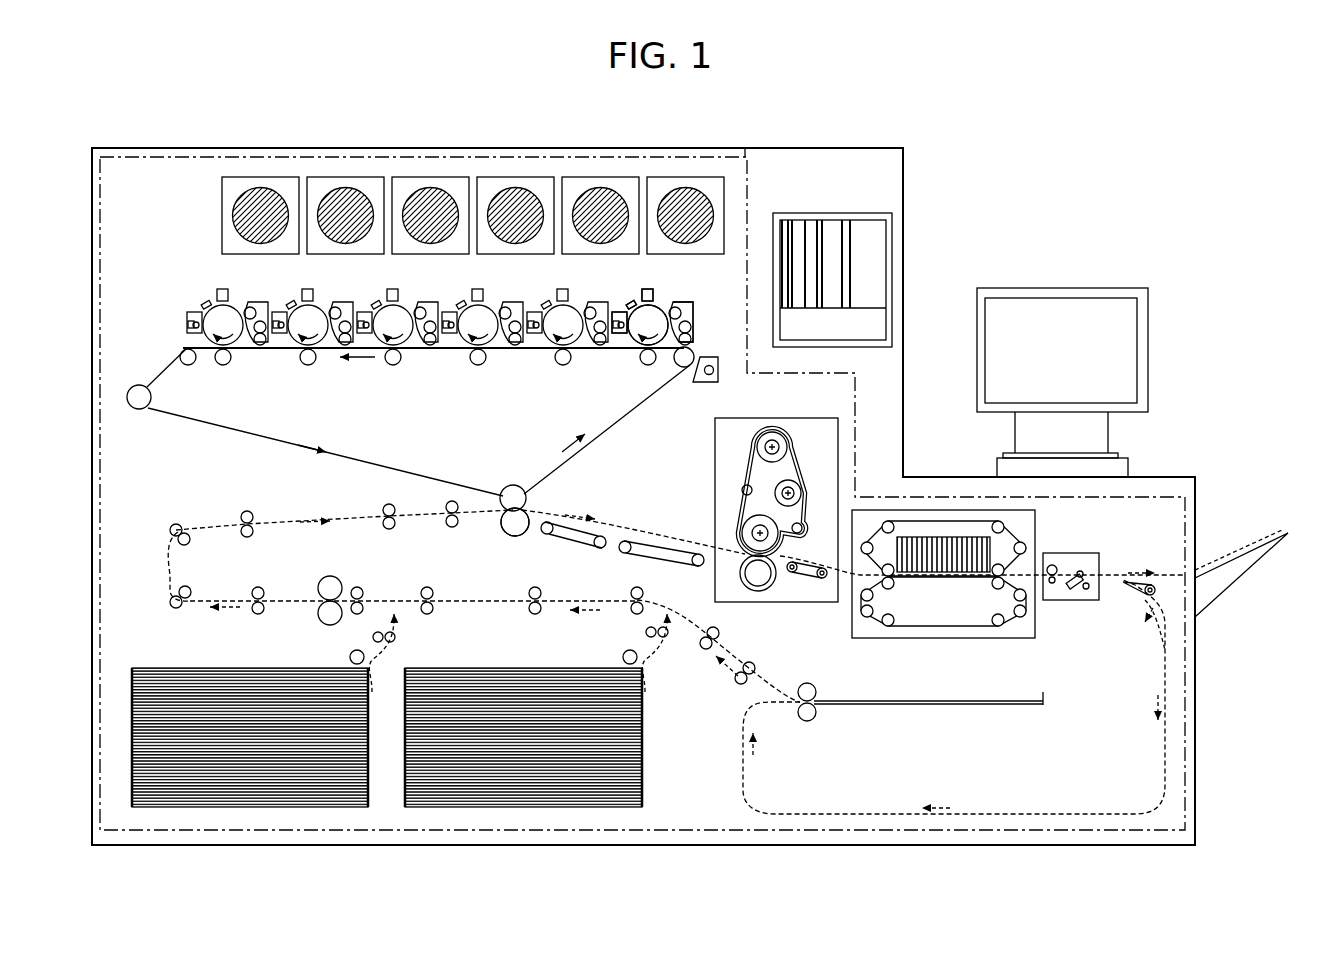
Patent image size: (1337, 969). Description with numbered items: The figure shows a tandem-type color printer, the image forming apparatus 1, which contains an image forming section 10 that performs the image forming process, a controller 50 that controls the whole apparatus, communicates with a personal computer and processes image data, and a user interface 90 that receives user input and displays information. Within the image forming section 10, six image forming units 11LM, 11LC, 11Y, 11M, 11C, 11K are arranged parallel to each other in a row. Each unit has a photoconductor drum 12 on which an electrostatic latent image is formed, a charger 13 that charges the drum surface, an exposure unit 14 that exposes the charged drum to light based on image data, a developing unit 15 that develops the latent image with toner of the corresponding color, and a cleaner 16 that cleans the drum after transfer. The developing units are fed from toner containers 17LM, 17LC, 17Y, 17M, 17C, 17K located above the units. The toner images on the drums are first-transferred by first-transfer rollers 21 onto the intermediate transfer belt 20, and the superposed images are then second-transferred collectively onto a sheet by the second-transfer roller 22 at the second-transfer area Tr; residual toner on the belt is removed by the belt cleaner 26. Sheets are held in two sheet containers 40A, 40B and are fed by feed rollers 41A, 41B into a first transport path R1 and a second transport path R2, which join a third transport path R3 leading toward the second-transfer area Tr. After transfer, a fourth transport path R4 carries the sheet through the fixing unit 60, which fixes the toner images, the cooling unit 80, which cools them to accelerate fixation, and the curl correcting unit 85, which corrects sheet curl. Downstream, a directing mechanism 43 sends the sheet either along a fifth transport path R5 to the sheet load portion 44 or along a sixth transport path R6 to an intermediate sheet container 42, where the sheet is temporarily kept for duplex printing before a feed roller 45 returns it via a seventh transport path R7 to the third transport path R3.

The image forming apparatus 1 is at (863, 128).
The image forming section 10 is at (748, 142).
The toner container 17K is at (262, 177).
The toner container 17C is at (347, 177).
The toner container 17M is at (432, 177).
The toner container 17Y is at (517, 177).
The toner container 17LC is at (602, 177).
The toner container 17LM is at (688, 177).
The image forming unit 11K is at (238, 303).
The image forming unit 11C is at (323, 303).
The image forming unit 11M is at (408, 303).
The image forming unit 11Y is at (493, 303).
The image forming unit 11LC is at (578, 303).
The image forming unit 11LM is at (672, 330).
The photoconductor drum 12 is at (638, 346).
The charger 13 is at (630, 302).
The exposure unit 14 is at (651, 300).
The developing unit 15 is at (690, 303).
The cleaner 16 is at (616, 335).
The intermediate transfer belt 20 is at (268, 441).
The first-transfer roller 21 is at (223, 366).
The second-transfer roller 22 is at (515, 538).
The belt cleaner 26 is at (705, 383).
The second-transfer area Tr is at (528, 505).
The sheet container 40A is at (185, 668).
The feed roller 41A is at (348, 656).
The sheet container 40B is at (490, 668).
The feed roller 41B is at (622, 656).
The intermediate sheet container 42 is at (983, 705).
The directing mechanism 43 is at (1130, 587).
The sheet load portion 44 is at (1237, 595).
The feed roller 45 is at (808, 682).
The controller 50 is at (832, 213).
The fixing unit 60 is at (757, 418).
The cooling unit 80 is at (950, 510).
The curl correcting unit 85 is at (1070, 553).
The user interface 90 is at (1077, 288).
The first transport path R1 is at (384, 666).
The second transport path R2 is at (665, 666).
The third transport path R3 is at (215, 598).
The fourth transport path R4 is at (642, 528).
The fifth transport path R5 is at (1175, 575).
The sixth transport path R6 is at (833, 812).
The seventh transport path R7 is at (735, 655).